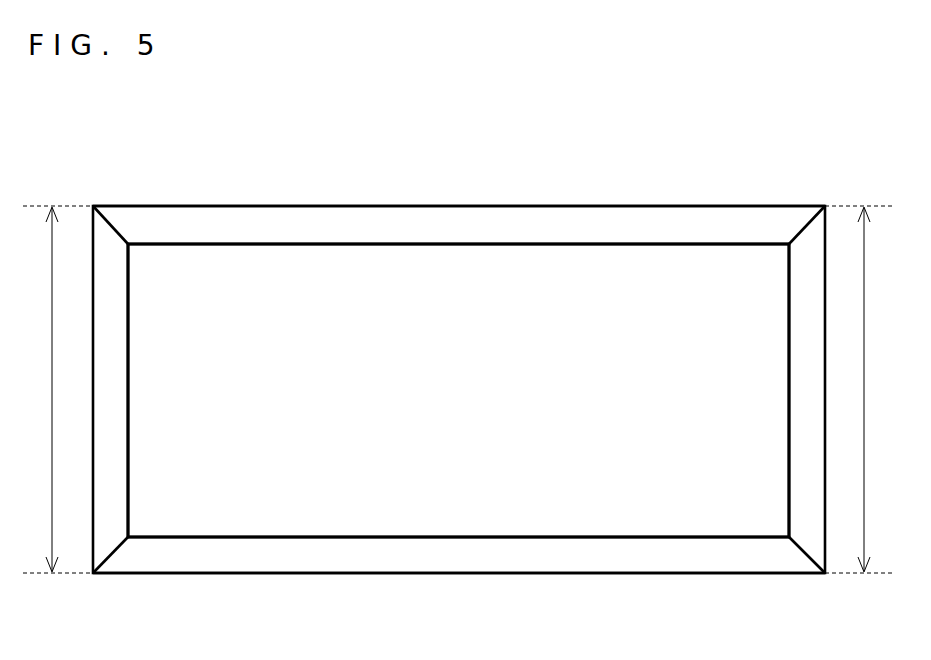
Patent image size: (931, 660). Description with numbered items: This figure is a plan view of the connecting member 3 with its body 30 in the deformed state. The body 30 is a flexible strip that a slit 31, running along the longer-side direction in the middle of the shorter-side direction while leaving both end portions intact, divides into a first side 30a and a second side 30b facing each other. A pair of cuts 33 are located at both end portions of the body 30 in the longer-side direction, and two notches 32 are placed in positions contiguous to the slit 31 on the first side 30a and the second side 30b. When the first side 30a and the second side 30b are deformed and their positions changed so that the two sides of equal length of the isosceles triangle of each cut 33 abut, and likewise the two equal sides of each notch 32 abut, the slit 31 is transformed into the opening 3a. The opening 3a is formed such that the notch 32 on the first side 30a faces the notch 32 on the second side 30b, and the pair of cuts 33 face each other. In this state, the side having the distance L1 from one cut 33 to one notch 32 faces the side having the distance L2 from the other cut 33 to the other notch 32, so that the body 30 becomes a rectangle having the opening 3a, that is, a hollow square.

The connecting member 3 is at (122, 117).
The opening 3a is at (478, 537).
The body 30 is at (720, 203).
The first side 30a is at (317, 227).
The second side 30b is at (314, 555).
The slit 31 is at (461, 243).
The notch 32 is at (110, 224).
The cut 33 is at (807, 224).
The distance L1 is at (55, 389).
The distance L2 is at (865, 389).